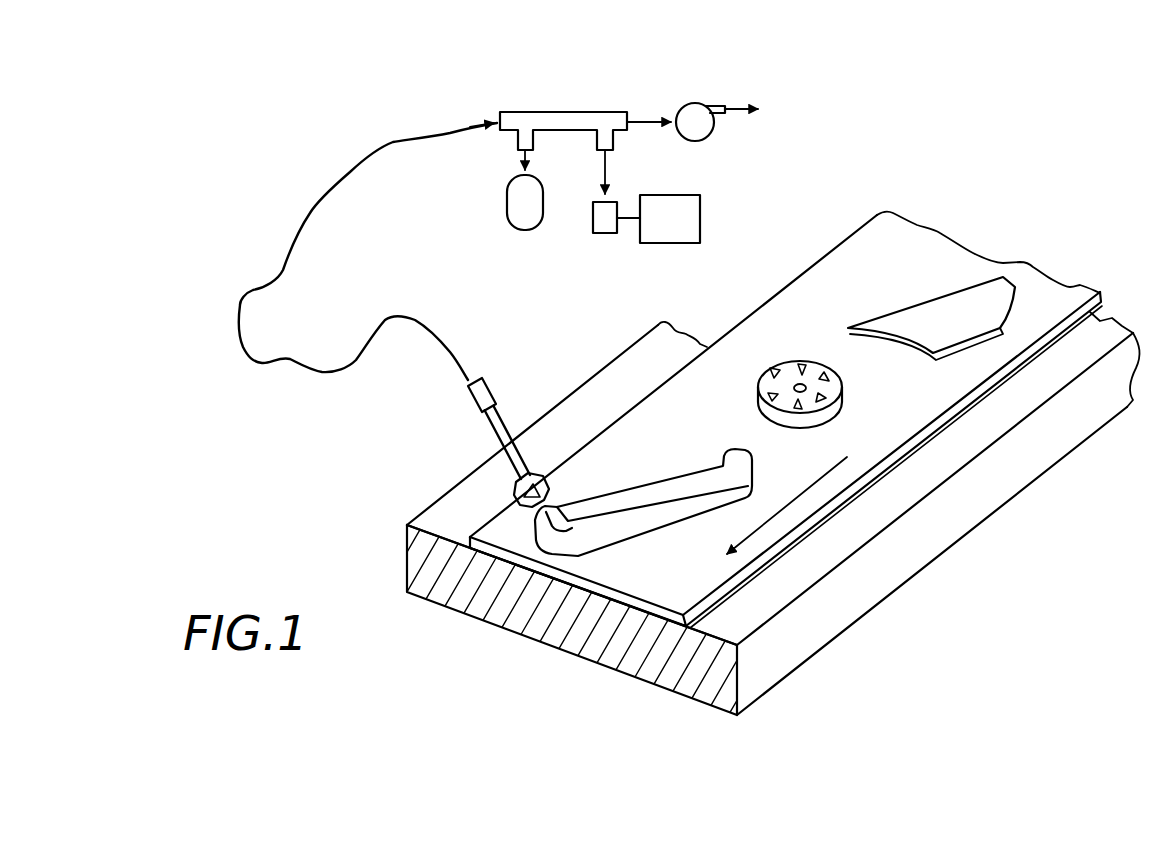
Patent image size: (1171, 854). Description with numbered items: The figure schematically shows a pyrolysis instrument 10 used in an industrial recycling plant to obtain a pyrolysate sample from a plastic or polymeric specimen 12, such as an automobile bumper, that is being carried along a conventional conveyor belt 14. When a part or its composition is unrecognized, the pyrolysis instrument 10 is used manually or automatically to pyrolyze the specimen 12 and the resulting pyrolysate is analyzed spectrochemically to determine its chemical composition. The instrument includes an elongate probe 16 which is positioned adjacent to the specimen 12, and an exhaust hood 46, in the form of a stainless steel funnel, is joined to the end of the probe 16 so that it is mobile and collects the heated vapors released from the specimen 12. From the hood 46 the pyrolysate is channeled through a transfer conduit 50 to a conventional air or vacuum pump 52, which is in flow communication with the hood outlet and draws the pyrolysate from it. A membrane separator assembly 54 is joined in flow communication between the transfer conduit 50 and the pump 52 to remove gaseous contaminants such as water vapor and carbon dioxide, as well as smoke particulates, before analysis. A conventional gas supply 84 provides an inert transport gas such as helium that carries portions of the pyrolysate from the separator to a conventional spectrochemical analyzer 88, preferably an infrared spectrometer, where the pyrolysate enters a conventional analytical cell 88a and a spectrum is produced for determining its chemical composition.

The pyrolysis instrument 10 is at (258, 236).
The specimen 12 is at (674, 481).
The conveyor belt 14 is at (1084, 287).
The probe 16 is at (488, 440).
The hood 46 is at (547, 493).
The transfer conduit 50 is at (303, 374).
The pump 52 is at (696, 104).
The membrane separator assembly 54 is at (562, 110).
The gas supply 84 is at (503, 203).
The spectrochemical analyzer 88 is at (683, 229).
The analytical cell 88a is at (602, 236).